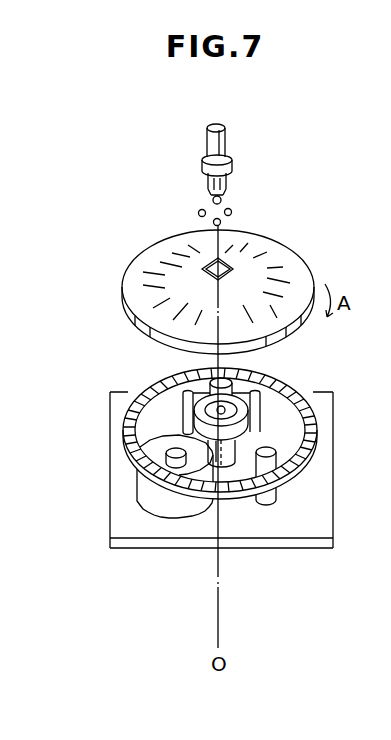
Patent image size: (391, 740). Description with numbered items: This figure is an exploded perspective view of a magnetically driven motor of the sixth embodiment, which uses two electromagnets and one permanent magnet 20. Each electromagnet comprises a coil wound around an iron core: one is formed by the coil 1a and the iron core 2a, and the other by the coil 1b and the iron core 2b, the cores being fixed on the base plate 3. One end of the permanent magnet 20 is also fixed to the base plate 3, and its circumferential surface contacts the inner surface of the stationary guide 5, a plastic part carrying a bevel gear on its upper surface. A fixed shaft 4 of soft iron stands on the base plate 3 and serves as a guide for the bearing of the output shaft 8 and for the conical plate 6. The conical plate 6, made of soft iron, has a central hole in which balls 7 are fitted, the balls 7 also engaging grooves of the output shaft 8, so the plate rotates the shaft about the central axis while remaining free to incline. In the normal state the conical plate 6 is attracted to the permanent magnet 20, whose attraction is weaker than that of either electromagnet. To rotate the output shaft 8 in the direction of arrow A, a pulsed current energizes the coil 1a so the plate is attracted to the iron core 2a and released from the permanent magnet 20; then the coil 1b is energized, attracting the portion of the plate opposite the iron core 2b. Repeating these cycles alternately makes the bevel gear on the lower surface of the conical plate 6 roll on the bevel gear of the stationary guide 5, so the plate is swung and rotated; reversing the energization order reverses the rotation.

The output shaft 8 is at (228, 148).
The balls 7 is at (232, 211).
The conical plate 6 is at (296, 276).
The iron core 2a is at (130, 446).
The iron core 2b is at (200, 372).
The coil 1b is at (190, 398).
The stationary guide 5 is at (279, 384).
The fixed shaft 4 is at (250, 412).
The coil 1a is at (148, 497).
The permanent magnet 20 is at (277, 449).
The base plate 3 is at (308, 517).